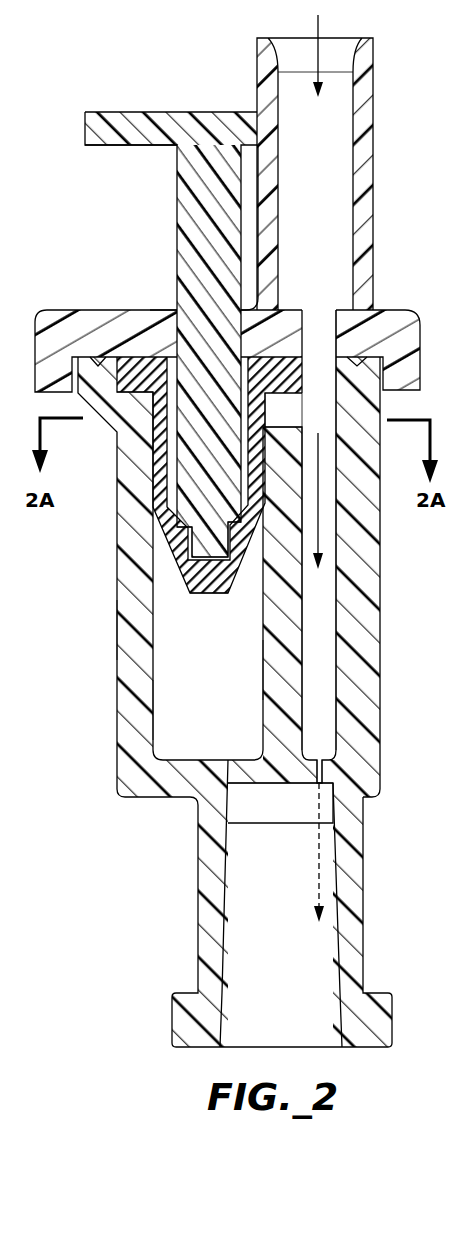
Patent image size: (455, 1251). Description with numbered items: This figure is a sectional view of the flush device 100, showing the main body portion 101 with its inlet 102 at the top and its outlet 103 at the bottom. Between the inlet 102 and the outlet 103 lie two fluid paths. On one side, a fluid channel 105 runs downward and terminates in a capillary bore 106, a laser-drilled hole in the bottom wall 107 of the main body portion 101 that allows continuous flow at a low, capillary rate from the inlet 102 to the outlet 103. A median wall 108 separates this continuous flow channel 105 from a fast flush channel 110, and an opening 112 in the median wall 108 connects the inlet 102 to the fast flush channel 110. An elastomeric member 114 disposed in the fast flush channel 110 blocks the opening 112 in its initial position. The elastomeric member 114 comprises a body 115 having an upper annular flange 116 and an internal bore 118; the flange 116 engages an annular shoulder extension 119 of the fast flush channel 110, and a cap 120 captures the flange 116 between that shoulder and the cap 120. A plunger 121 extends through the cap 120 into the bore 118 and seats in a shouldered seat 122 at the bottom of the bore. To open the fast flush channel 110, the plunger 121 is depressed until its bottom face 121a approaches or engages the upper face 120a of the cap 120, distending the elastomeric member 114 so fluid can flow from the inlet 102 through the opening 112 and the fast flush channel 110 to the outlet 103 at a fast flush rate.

The device 100 is at (113, 631).
The main body portion 101 is at (380, 670).
The inlet 102 is at (332, 235).
The outlet 103 is at (323, 933).
The fluid channel 105 is at (323, 587).
The capillary bore 106 is at (320, 776).
The bottom wall 107 is at (303, 767).
The median wall 108 is at (280, 645).
The fast flush channel 110 is at (162, 693).
The opening 112 is at (292, 398).
The elastomeric member 114 is at (178, 531).
The body 115 is at (150, 482).
The upper annular flange 116 is at (143, 353).
The internal bore 118 is at (245, 466).
The annular shoulder extension 119 is at (125, 392).
The cap 120 is at (43, 310).
The upper face 120a is at (163, 310).
The plunger 121 is at (182, 122).
The bottom face 121a is at (150, 148).
The shouldered seat 122 is at (192, 538).